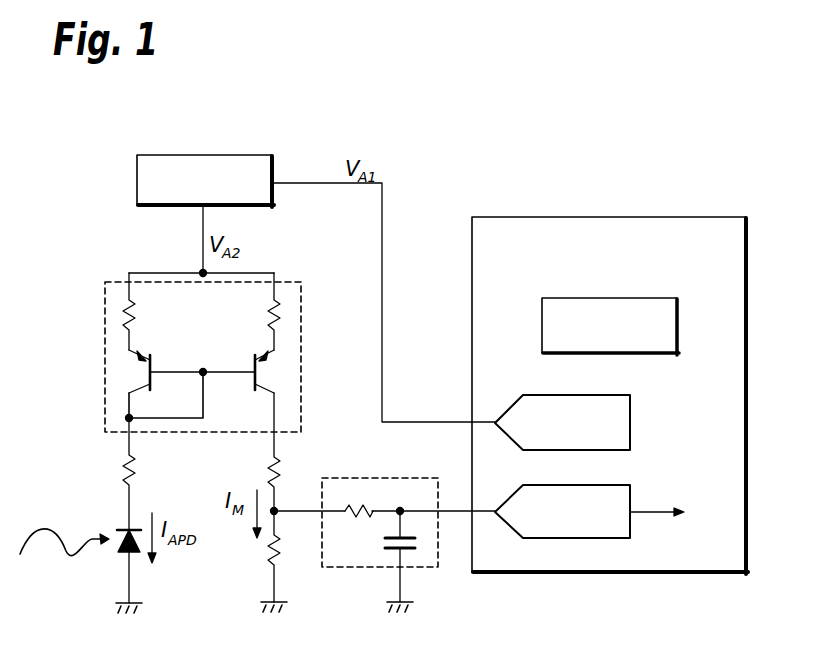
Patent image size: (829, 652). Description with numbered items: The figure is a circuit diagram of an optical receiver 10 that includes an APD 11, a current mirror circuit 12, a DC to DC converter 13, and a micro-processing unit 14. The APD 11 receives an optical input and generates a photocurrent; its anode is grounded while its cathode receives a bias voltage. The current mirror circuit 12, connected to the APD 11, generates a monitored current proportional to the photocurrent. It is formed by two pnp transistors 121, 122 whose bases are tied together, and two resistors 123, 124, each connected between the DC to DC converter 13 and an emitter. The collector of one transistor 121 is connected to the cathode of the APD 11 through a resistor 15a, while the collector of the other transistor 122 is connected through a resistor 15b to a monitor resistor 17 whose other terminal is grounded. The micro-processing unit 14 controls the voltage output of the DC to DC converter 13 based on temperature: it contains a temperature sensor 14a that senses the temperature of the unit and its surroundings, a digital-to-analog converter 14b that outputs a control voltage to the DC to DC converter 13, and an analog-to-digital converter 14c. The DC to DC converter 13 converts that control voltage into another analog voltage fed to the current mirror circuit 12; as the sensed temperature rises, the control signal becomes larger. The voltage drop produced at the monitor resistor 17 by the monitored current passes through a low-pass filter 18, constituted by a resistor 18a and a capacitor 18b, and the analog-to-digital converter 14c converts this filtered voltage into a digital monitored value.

The optical receiver 10 is at (522, 98).
The APD 11 is at (123, 553).
The current mirror circuit 12 is at (108, 282).
The pnp transistor 121 is at (153, 362).
The pnp transistor 122 is at (252, 362).
The resistor 123 is at (128, 306).
The resistor 124 is at (278, 311).
The DC to DC converter 13 is at (249, 154).
The micro-processing unit 14 is at (717, 214).
The temperature sensor 14a is at (622, 298).
The digital-to-analog converter 14b is at (598, 395).
The analog-to-digital converter 14c is at (597, 485).
The resistor 15a is at (120, 465).
The resistor 15b is at (282, 463).
The monitor resistor 17 is at (278, 563).
The low-pass filter 18 is at (402, 477).
The resistor 18a is at (358, 516).
The capacitor 18b is at (408, 553).